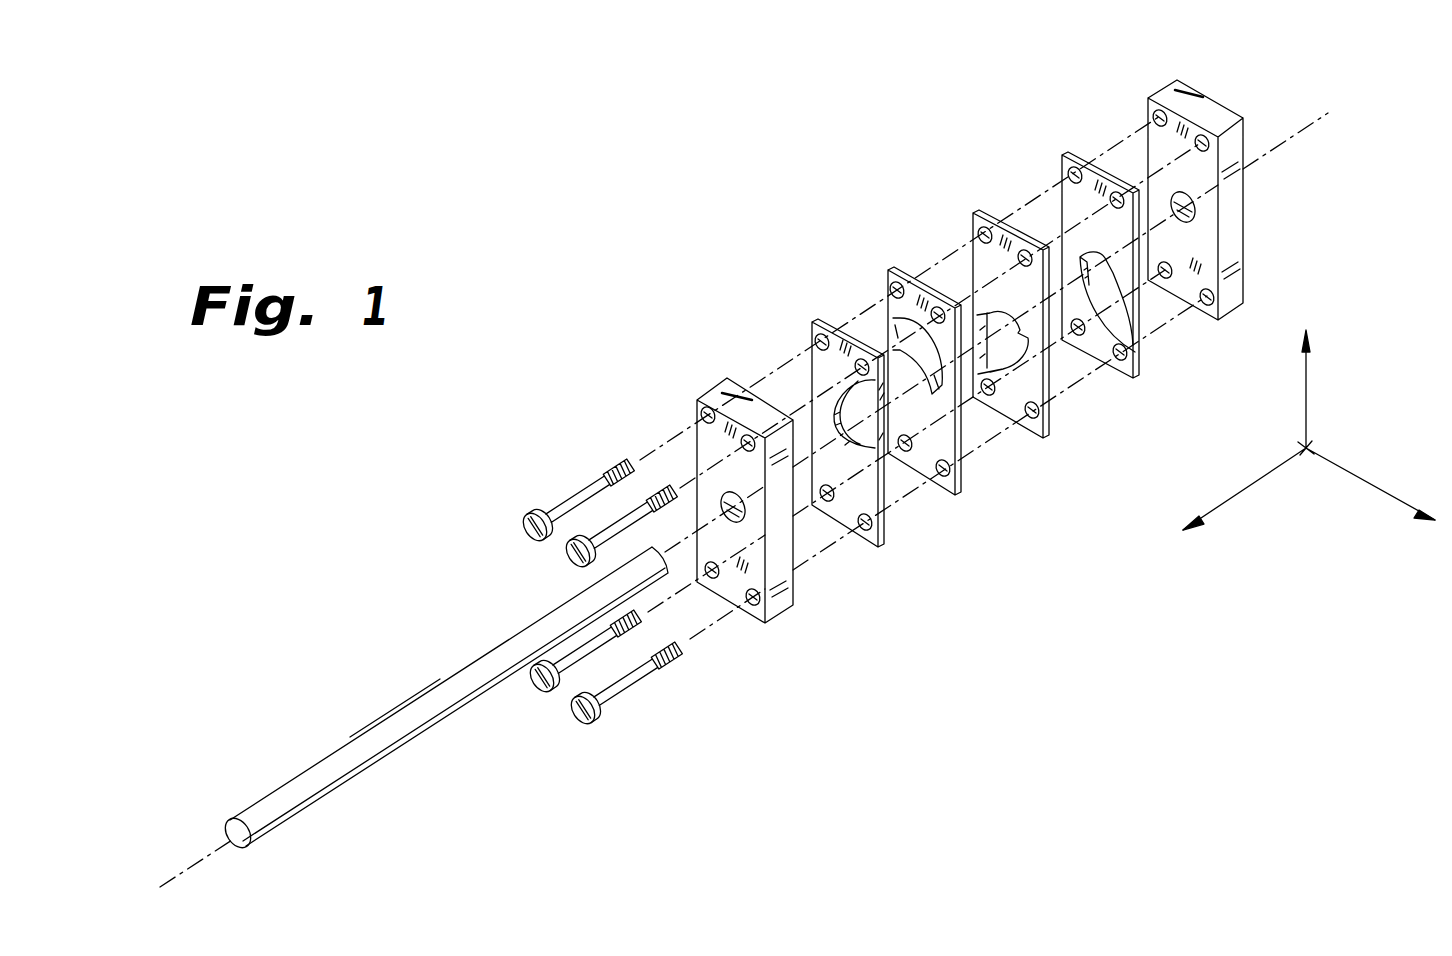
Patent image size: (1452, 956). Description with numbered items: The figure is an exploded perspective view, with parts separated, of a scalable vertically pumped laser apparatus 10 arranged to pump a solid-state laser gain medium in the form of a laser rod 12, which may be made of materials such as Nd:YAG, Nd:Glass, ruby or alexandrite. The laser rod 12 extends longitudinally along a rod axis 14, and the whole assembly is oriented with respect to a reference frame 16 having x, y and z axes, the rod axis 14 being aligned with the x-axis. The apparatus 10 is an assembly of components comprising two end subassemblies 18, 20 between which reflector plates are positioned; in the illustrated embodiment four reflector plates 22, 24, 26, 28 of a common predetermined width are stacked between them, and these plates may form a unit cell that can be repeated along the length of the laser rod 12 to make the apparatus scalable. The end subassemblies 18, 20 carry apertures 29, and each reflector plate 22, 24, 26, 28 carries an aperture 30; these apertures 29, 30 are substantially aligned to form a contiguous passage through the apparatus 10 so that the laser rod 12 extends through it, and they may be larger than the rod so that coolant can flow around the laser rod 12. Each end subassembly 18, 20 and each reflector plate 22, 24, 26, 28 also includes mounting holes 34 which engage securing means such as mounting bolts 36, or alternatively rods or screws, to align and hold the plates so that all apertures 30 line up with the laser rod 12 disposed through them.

The apparatus 10 is at (677, 252).
The laser rod 12 is at (322, 760).
The rod axis 14 is at (180, 868).
The reference frame 16 is at (1378, 375).
The end subassembly 18 is at (698, 367).
The end subassembly 20 is at (1230, 338).
The reflector plate 22 is at (893, 578).
The reflector plate 24 is at (975, 516).
The reflector plate 26 is at (1055, 449).
The reflector plate 28 is at (1143, 398).
The aperture 29 is at (737, 522).
The aperture 30 is at (840, 452).
The mounting hole 34 is at (820, 338).
The mounting bolts 36 is at (566, 470).